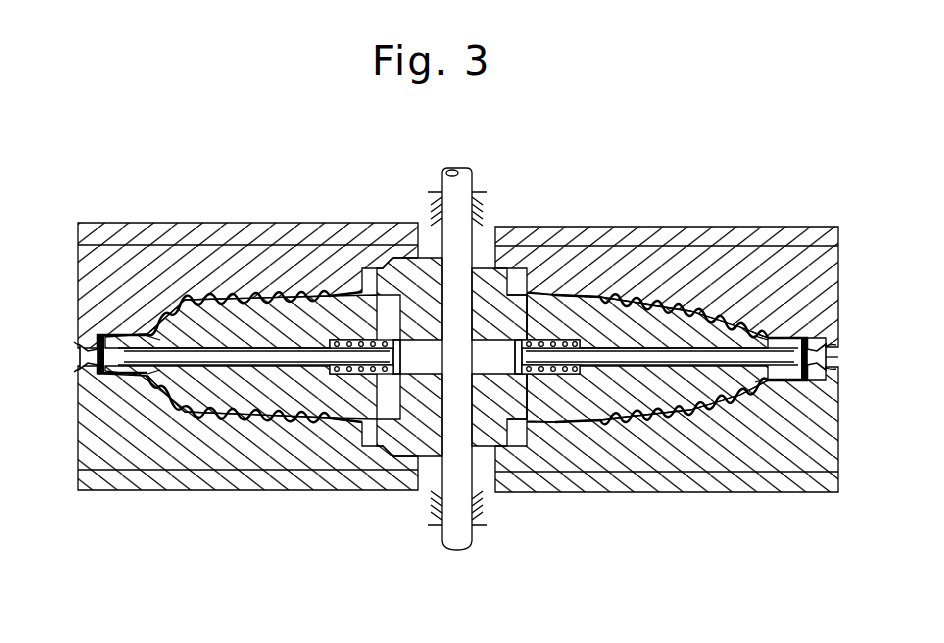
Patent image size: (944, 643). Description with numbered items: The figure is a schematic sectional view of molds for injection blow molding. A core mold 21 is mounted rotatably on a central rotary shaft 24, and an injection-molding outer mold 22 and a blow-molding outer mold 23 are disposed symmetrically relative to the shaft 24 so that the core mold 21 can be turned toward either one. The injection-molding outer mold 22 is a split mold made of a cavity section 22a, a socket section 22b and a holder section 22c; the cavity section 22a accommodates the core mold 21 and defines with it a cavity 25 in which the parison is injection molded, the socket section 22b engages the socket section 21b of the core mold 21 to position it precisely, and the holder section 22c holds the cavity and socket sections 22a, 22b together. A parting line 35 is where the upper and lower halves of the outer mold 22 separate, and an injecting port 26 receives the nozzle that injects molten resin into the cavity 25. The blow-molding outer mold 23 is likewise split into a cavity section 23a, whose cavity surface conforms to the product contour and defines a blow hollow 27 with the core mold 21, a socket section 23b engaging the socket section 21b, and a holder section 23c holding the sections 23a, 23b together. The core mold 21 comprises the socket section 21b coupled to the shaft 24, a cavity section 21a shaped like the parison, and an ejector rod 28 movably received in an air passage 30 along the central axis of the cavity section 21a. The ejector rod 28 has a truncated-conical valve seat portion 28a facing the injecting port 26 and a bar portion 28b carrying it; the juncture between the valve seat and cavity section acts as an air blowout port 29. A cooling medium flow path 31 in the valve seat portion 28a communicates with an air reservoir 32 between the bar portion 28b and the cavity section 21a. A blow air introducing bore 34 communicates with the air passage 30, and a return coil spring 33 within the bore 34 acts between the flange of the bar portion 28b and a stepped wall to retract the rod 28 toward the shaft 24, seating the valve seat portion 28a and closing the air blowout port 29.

The core mold 21 is at (652, 380).
The cavity section 21a is at (590, 422).
The socket section 21b is at (665, 540).
The injection-molding outer mold 22 is at (666, 319).
The cavity section 22a is at (693, 270).
The socket section 22b is at (548, 242).
The holder section 22c is at (620, 240).
The blow-molding outer mold 23 is at (248, 318).
The cavity section 23a is at (241, 263).
The socket section 23b is at (352, 262).
The holder section 23c is at (345, 180).
The central rotary shaft 24 is at (471, 183).
The cavity 25 is at (795, 326).
The injecting port 26 is at (829, 356).
The blow hollow 27 is at (207, 302).
The ejector rod 28 is at (458, 447).
The valve seat portion 28a is at (118, 382).
The bar portion 28b is at (338, 380).
The air blowout port 29 is at (165, 386).
The air passage 30 is at (272, 366).
The cooling medium flow path 31 is at (141, 384).
The air reservoir 32 is at (186, 382).
The return coil spring 33 is at (513, 318).
The blow air introducing bore 34 is at (402, 338).
The parting line 35 is at (80, 366).